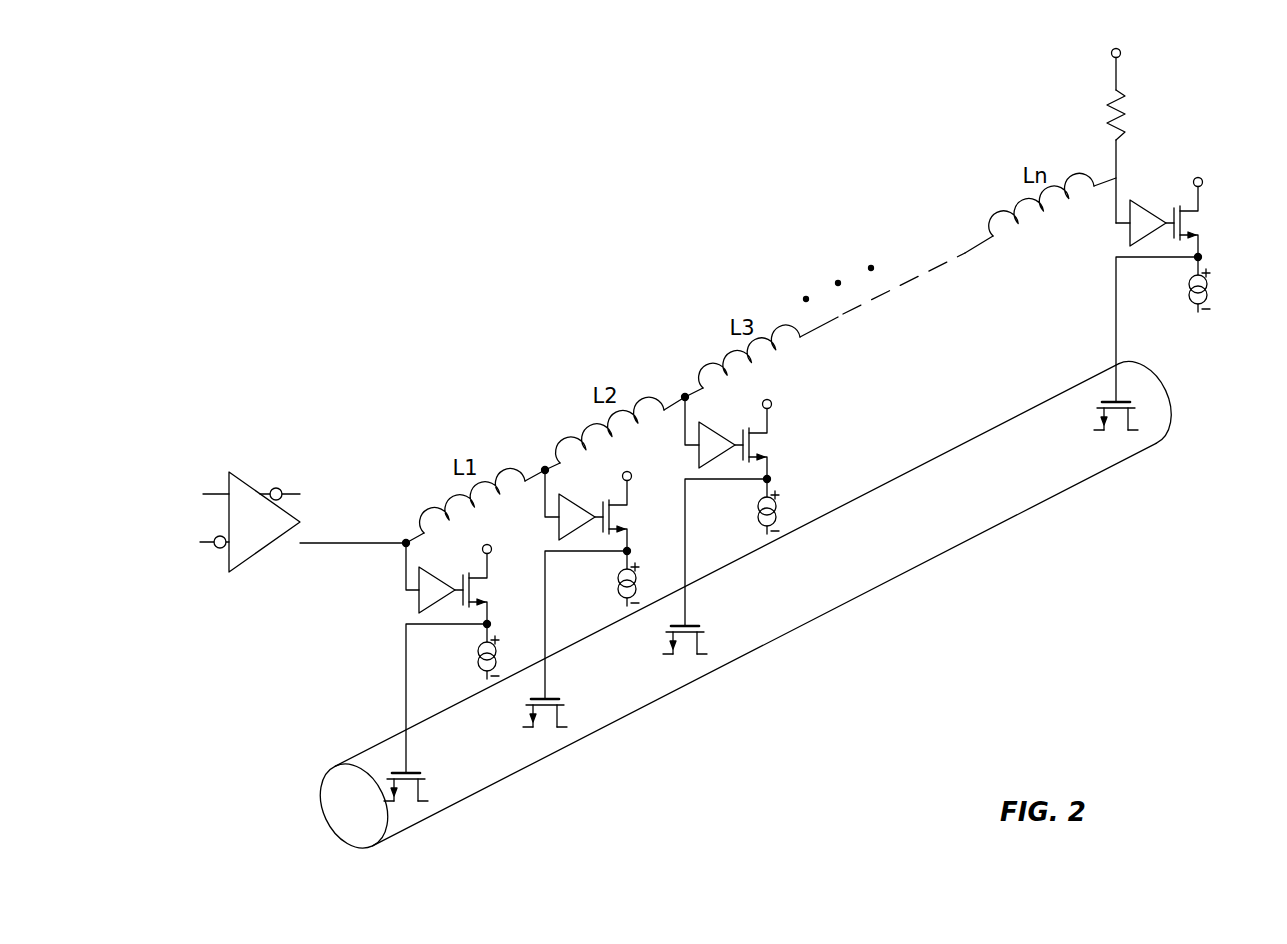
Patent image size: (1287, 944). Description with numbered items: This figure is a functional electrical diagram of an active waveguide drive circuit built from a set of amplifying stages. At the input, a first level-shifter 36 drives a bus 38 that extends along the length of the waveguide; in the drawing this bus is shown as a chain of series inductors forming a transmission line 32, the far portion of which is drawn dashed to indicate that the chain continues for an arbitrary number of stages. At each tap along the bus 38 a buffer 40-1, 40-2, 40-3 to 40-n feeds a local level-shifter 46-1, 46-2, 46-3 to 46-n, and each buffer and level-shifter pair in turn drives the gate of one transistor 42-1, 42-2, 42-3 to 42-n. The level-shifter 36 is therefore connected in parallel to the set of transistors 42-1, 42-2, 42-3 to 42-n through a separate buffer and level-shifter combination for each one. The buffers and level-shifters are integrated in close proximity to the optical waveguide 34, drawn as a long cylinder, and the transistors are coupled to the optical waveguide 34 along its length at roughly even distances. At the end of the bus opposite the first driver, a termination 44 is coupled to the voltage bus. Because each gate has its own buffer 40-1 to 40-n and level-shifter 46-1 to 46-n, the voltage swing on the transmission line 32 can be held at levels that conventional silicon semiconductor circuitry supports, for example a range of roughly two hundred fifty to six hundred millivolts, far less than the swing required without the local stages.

The transmission line 32 is at (915, 281).
The optical waveguide 34 is at (739, 610).
The level-shifter 36 is at (246, 480).
The bus 38 is at (329, 545).
The buffer 40-1 is at (418, 600).
The buffer 40-2 is at (559, 527).
The buffer 40-3 is at (699, 450).
The buffer 40-n is at (1130, 243).
The transistor 42-1 is at (421, 790).
The transistor 42-2 is at (562, 718).
The transistor 42-3 is at (700, 645).
The transistor 42-n is at (1156, 359).
The termination 44 is at (1128, 120).
The level-shifter 46-1 is at (490, 606).
The level-shifter 46-2 is at (632, 534).
The level-shifter 46-3 is at (772, 465).
The level-shifter 46-n is at (1200, 221).